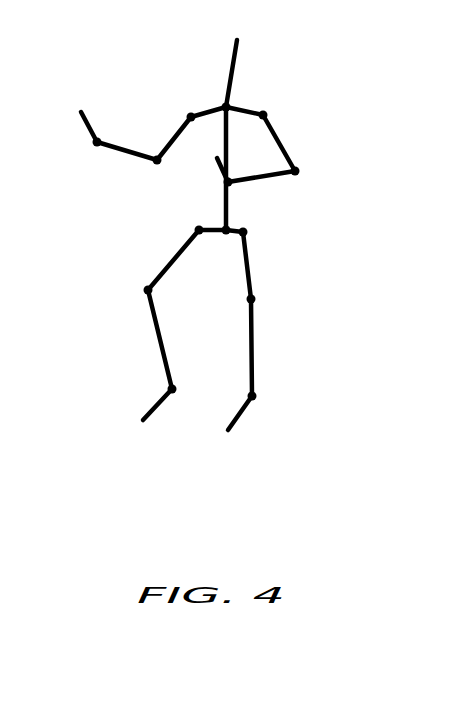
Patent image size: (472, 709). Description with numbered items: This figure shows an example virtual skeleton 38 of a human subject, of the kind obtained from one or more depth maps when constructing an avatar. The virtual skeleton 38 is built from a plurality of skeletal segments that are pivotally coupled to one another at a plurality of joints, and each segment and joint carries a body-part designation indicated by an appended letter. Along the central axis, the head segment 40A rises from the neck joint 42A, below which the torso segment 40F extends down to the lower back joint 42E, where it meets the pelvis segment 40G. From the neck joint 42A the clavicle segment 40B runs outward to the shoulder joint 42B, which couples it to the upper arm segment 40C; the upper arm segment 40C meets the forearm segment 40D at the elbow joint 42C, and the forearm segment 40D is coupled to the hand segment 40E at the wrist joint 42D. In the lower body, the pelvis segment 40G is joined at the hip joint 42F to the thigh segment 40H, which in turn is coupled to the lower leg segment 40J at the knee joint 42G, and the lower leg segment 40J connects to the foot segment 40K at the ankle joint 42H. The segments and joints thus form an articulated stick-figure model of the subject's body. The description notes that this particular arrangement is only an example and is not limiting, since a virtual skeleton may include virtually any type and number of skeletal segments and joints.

The virtual skeleton 38 is at (330, 412).
The head skeletal segment 40A is at (257, 20).
The clavicle skeletal segment 40B is at (243, 110).
The upper arm skeletal segment 40C is at (180, 132).
The forearm skeletal segment 40D is at (270, 178).
The hand skeletal segment 40E is at (87, 120).
The torso skeletal segment 40F is at (223, 200).
The pelvis skeletal segment 40G is at (212, 233).
The thigh skeletal segment 40H is at (170, 260).
The lower leg skeletal segment 40J is at (255, 350).
The foot skeletal segment 40K is at (147, 410).
The neck joint 42A is at (220, 107).
The shoulder joint 42B is at (267, 115).
The elbow joint 42C is at (153, 163).
The wrist joint 42D is at (232, 181).
The lower back joint 42E is at (230, 231).
The hip joint 42F is at (246, 235).
The knee joint 42G is at (255, 299).
The ankle joint 42H is at (250, 397).